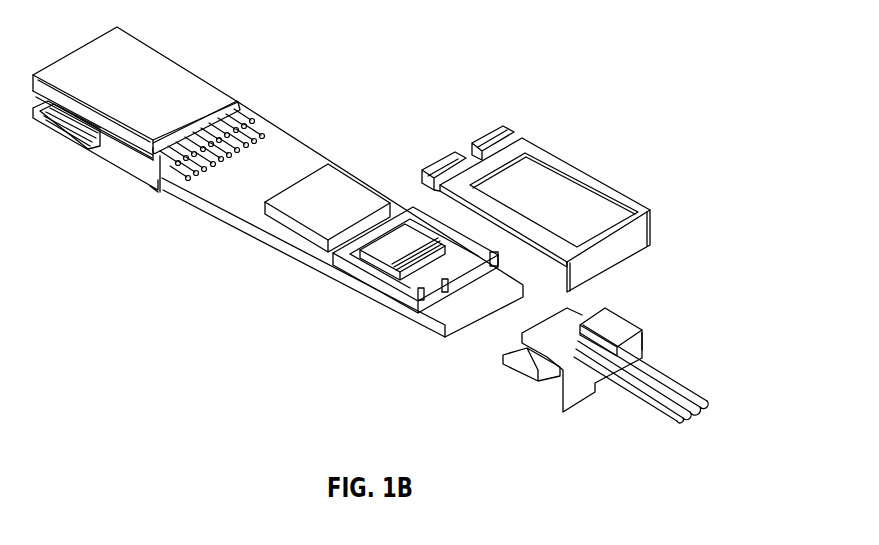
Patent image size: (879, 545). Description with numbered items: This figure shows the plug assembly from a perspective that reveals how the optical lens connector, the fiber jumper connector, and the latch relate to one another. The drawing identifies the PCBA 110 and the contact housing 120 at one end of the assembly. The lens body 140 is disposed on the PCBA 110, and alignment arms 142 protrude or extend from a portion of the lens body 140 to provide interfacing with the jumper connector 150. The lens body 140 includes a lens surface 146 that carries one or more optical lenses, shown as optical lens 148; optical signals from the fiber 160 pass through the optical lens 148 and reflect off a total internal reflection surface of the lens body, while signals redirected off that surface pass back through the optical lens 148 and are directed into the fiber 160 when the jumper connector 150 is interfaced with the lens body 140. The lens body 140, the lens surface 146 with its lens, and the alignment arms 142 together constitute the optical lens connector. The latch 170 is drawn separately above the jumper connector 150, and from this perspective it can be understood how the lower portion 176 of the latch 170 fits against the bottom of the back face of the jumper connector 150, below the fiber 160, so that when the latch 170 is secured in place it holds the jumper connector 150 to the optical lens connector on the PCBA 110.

The PCBA 110 is at (253, 153).
The contact housing 120 is at (164, 66).
The lens body 140 is at (306, 239).
The alignment arms 142 is at (488, 272).
The lens surface 146 is at (398, 277).
The optical lens 148 is at (312, 208).
The jumper connector 150 is at (503, 349).
The fiber 160 is at (643, 349).
The latch 170 is at (595, 187).
The lower portion 176 is at (627, 237).